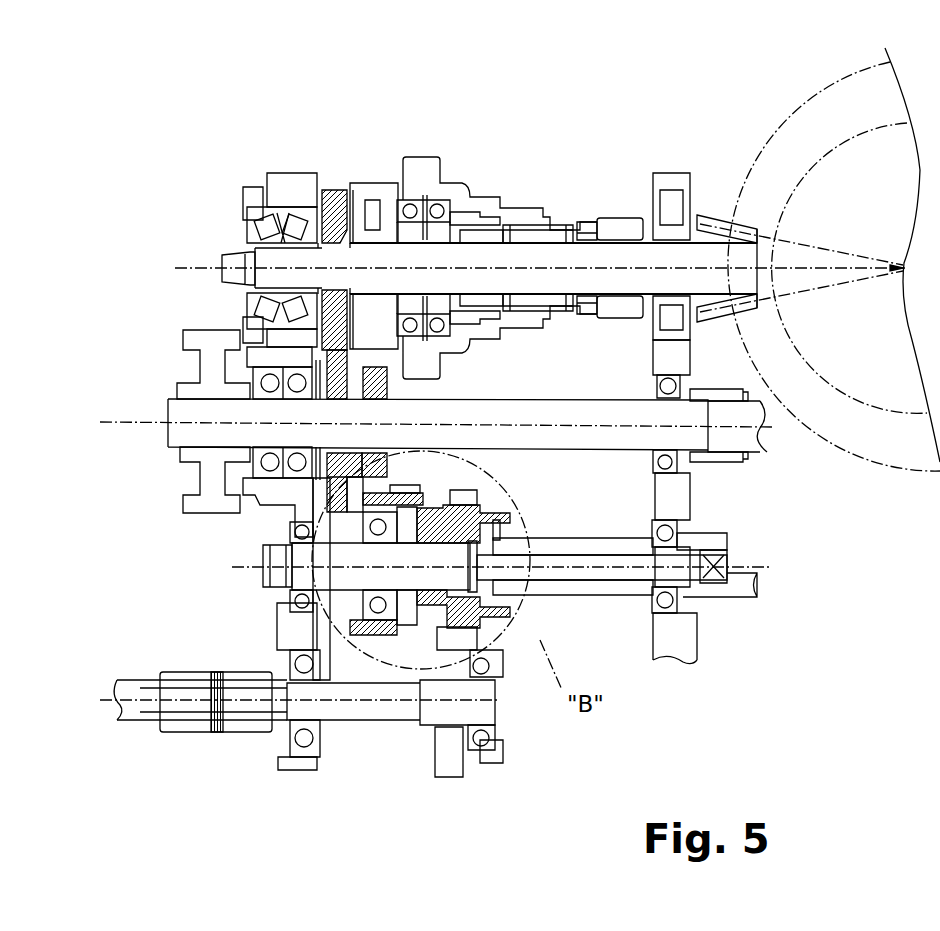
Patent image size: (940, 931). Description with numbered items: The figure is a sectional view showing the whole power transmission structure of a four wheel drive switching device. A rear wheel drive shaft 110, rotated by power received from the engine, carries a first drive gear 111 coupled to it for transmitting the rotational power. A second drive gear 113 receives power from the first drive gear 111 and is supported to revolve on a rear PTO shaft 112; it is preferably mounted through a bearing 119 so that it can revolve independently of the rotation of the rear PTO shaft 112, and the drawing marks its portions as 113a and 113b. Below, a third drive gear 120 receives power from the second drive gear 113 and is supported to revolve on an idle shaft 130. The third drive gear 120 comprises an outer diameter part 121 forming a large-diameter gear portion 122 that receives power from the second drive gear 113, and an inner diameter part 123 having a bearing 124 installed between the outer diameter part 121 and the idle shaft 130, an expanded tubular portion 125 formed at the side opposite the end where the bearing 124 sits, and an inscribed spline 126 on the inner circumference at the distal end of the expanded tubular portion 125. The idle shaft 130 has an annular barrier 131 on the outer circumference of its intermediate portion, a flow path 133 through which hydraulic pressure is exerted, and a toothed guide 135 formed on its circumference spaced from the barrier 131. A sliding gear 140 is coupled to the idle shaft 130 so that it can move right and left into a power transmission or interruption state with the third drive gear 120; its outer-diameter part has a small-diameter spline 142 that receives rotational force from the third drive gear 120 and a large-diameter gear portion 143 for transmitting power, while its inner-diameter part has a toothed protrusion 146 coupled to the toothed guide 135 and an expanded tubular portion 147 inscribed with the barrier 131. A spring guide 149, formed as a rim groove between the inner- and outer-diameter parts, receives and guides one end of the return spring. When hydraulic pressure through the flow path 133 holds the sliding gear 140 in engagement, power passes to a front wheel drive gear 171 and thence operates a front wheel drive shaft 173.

The rear wheel drive shaft 110 is at (720, 257).
The first drive gear 111 is at (323, 190).
The rear PTO shaft 112 is at (187, 417).
The second drive gear 113 is at (232, 286).
The first gear 113a is at (330, 346).
The second gear 113b is at (363, 372).
The bearing 119 is at (380, 452).
The third drive gear 120 is at (403, 481).
The outer diameter part 121 is at (201, 514).
The large-diameter gear portion 122 is at (300, 478).
The inner diameter part 123 is at (377, 726).
The bearing 124 is at (345, 627).
The expanded tubular portion 125 is at (385, 636).
The inscribed spline 126 is at (400, 630).
The idle shaft 130 is at (313, 530).
The annular barrier 131 is at (533, 592).
The flow path 133 is at (697, 603).
The toothed guide 135 is at (470, 708).
The sliding gear 140 is at (487, 504).
The small-diameter spline 142 is at (480, 462).
The large-diameter gear portion 143 is at (565, 487).
The toothed protrusion 146 is at (568, 556).
The expanded tubular portion 147 is at (468, 548).
The spring guide 149 is at (262, 580).
The front wheel drive gear 171 is at (453, 753).
The front wheel drive shaft 173 is at (232, 725).